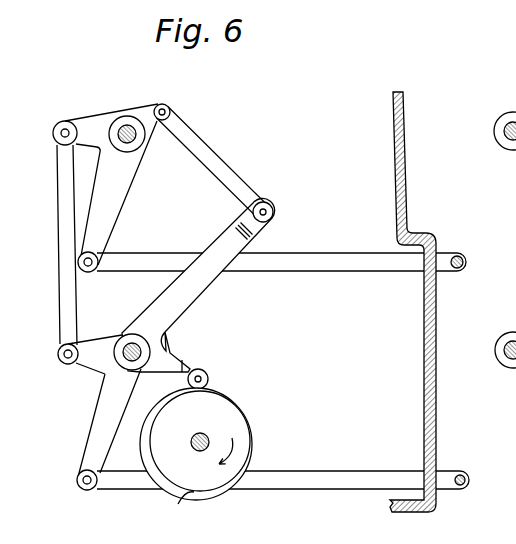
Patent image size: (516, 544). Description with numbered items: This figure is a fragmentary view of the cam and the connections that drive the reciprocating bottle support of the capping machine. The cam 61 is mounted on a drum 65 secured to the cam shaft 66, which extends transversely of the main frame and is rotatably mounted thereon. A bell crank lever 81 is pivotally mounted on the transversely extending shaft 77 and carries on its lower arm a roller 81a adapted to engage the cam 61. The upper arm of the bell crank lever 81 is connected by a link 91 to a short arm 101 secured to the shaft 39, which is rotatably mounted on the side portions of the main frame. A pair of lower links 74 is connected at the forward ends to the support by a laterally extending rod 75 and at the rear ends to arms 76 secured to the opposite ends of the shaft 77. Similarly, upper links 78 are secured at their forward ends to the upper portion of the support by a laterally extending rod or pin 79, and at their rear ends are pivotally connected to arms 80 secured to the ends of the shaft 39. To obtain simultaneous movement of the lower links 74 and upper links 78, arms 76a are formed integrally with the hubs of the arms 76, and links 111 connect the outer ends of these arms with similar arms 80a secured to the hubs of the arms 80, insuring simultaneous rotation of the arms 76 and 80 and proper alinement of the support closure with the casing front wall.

The transversely extending shaft 39 is at (137, 149).
The cam 61 is at (188, 493).
The drum 65 is at (222, 478).
The cam shaft 66 is at (206, 437).
The lower links 74 is at (330, 468).
The laterally extending rod 75 is at (461, 471).
The arms 76 is at (100, 420).
The arms 76a is at (93, 342).
The transversely extending shaft 77 is at (118, 362).
The upper links 78 is at (347, 251).
The laterally extending rod or pin 79 is at (461, 254).
The arms 80 is at (124, 204).
The arms 80a is at (101, 119).
The bell crank lever 81 is at (168, 353).
The roller 81a is at (212, 377).
The link 91 is at (208, 150).
The short arm 101 is at (152, 104).
The links 111 is at (63, 241).